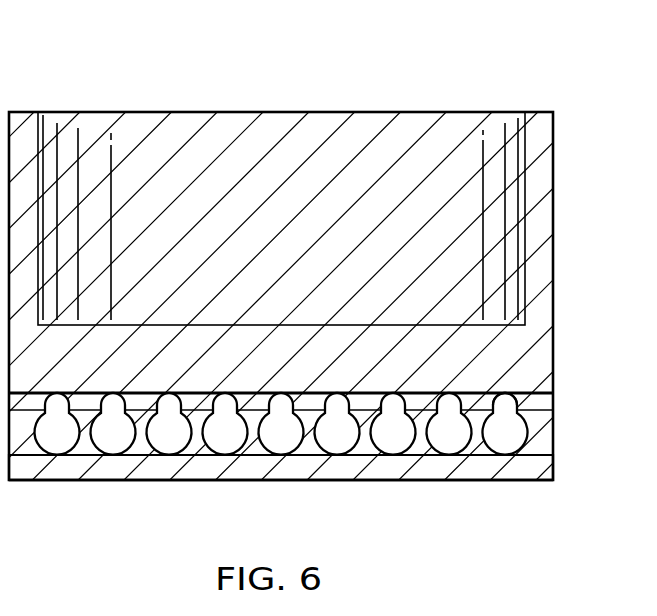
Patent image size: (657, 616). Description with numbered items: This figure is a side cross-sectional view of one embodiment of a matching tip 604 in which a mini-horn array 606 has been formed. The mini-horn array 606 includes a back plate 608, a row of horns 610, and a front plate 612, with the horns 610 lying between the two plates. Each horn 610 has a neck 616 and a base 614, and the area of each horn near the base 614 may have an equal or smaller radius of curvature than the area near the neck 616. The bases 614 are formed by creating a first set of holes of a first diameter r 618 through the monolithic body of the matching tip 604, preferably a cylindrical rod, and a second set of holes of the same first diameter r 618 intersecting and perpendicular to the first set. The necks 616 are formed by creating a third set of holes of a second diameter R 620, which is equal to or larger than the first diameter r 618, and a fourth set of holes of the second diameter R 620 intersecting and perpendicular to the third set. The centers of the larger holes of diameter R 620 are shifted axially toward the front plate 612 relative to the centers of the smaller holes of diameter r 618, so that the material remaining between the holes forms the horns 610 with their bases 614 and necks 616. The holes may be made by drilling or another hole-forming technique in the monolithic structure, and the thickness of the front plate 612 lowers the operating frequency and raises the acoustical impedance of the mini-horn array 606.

The matching tip 604 is at (80, 69).
The mini-horn array 606 is at (377, 464).
The back plate 608 is at (338, 325).
The horns 610 is at (187, 421).
The front plate 612 is at (467, 482).
The base 614 is at (166, 403).
The neck 616 is at (136, 432).
The first diameter r 618 is at (504, 405).
The second diameter R 620 is at (505, 438).